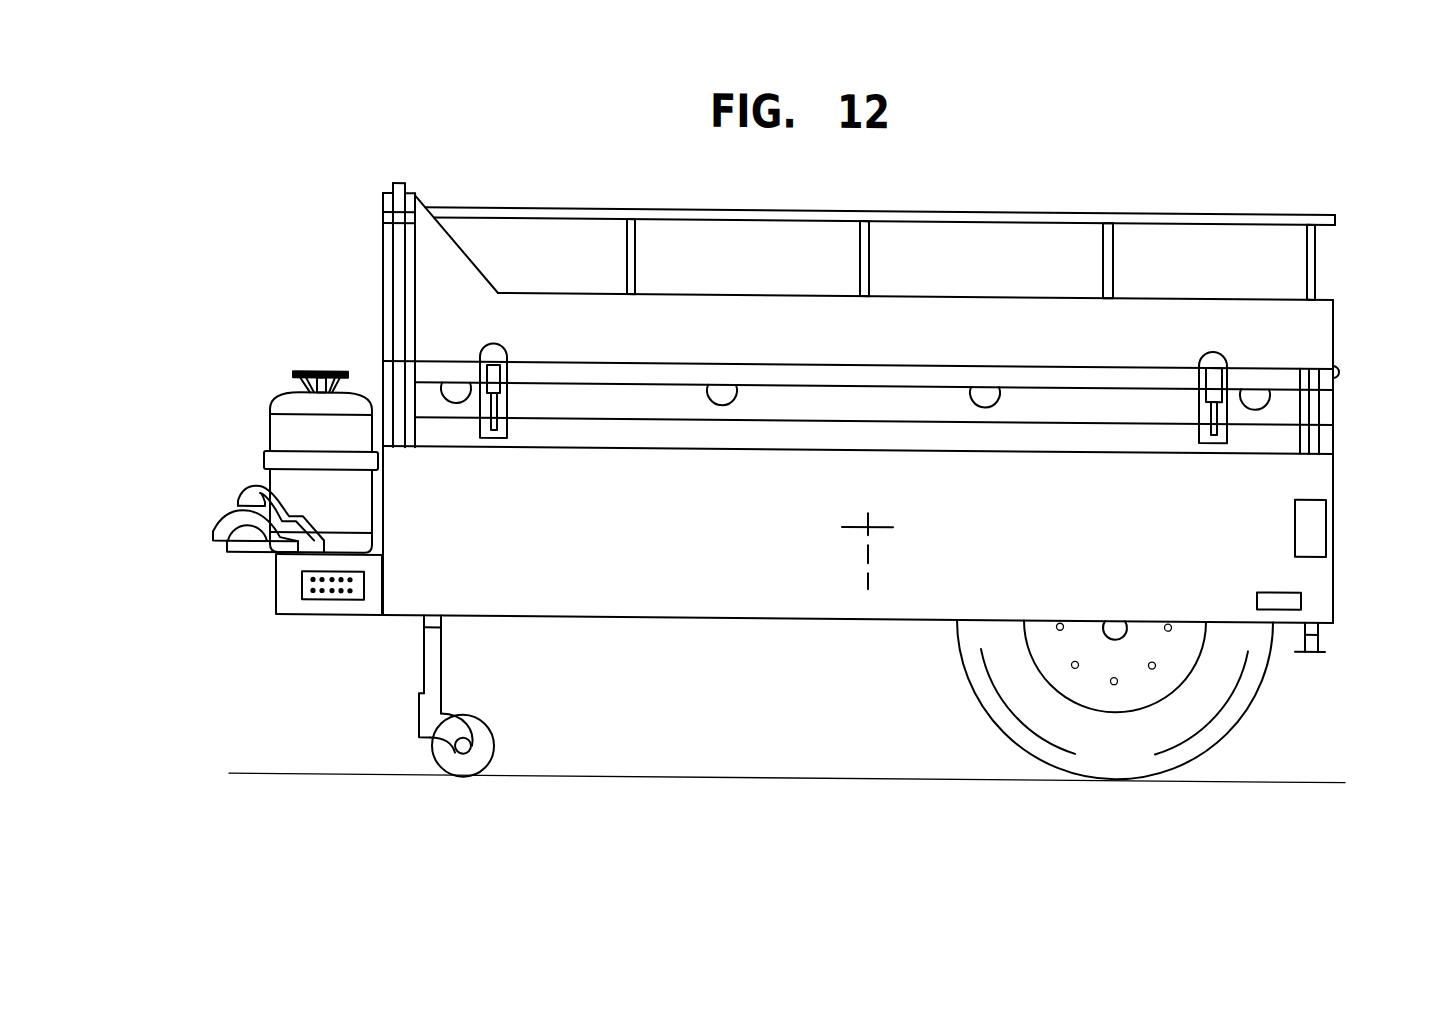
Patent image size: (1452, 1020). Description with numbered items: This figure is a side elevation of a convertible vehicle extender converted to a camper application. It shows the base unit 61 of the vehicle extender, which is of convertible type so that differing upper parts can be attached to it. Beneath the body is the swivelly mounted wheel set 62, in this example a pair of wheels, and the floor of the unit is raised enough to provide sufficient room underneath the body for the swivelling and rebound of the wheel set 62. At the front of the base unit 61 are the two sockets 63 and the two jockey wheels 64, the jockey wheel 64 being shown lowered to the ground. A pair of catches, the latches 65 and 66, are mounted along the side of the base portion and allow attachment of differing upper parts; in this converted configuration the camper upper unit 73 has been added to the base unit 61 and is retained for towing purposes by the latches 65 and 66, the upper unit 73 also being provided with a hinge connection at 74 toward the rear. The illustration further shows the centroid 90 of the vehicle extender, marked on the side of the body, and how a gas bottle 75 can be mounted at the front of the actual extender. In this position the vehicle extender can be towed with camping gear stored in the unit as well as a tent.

The vehicle extender 61 is at (812, 575).
The wheel set 62 is at (1230, 710).
The socket 63 is at (213, 529).
The jockey wheel 64 is at (441, 659).
The catch 65 is at (498, 406).
The catch 66 is at (1207, 403).
The camper upper unit 73 is at (972, 305).
The hinge connection 74 is at (1343, 364).
The gas bottle 75 is at (280, 404).
The centroid 90 is at (870, 529).